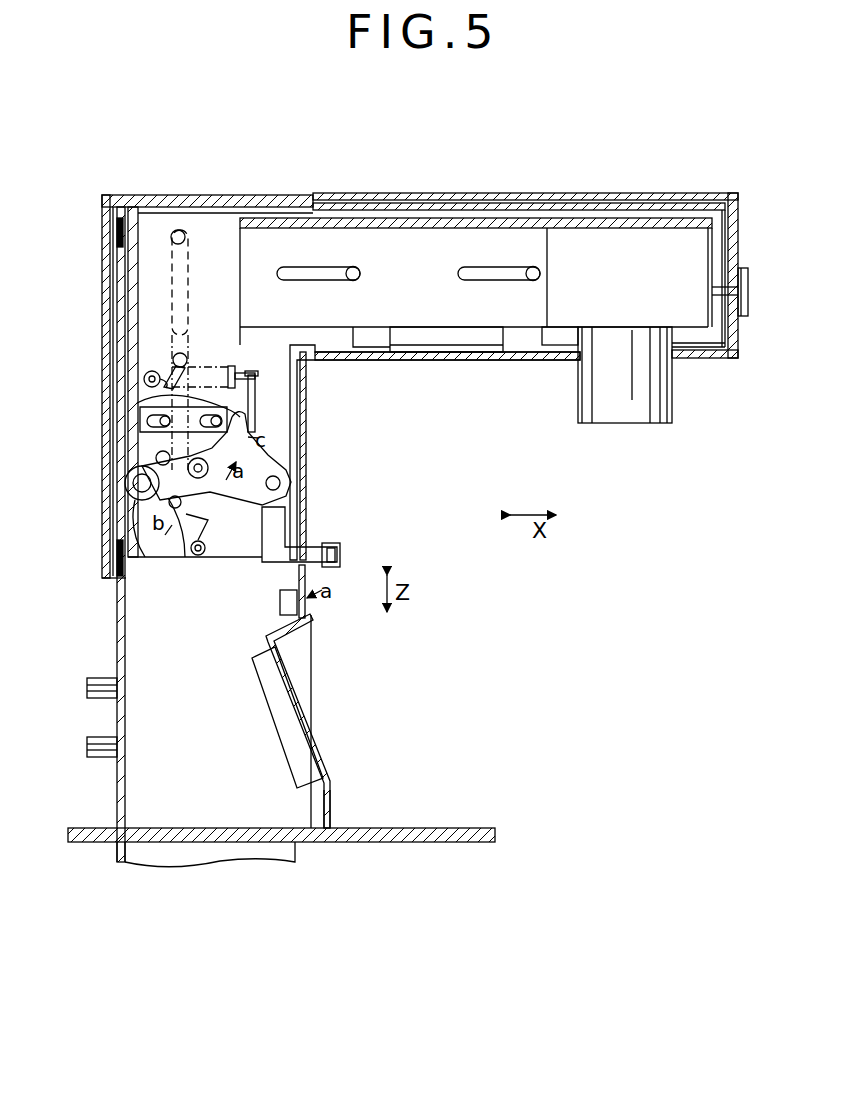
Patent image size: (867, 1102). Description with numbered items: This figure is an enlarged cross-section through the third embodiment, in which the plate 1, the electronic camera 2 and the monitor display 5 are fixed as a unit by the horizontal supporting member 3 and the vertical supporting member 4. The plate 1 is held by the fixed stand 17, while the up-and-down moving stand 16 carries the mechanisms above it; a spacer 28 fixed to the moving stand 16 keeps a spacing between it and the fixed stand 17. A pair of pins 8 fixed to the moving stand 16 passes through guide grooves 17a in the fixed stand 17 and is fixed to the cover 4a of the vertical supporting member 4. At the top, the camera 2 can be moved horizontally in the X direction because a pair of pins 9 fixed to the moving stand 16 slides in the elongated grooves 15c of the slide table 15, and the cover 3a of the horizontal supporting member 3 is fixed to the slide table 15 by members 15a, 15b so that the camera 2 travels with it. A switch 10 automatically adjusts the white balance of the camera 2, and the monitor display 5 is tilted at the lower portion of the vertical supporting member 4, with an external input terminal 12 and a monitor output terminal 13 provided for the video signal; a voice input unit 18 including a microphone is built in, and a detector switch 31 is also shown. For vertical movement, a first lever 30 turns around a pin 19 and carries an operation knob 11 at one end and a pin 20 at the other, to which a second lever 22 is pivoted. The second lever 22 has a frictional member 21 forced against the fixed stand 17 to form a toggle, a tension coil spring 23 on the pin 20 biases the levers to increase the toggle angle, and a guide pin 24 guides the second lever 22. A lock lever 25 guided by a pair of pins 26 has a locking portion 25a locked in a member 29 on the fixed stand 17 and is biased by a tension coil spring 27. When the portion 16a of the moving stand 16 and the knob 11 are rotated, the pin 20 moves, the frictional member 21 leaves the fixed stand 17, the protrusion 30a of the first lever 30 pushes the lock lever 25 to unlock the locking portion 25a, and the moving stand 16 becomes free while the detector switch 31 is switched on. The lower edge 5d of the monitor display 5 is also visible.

The plate 1 is at (435, 828).
The camera 2 is at (620, 428).
The horizontal supporting member 3 is at (636, 196).
The cover 3a is at (740, 333).
The vertical supporting member 4 is at (312, 455).
The cover 4a is at (306, 498).
The monitor display 5 is at (300, 736).
The cassette bottom edge 5d is at (332, 800).
The pins 8 is at (186, 237).
The pins 9 is at (360, 275).
The switch 10 is at (748, 292).
The operation knob 11 is at (342, 556).
The external input terminal 12 is at (88, 690).
The monitor output terminal 13 is at (88, 746).
The slide table 15 is at (290, 222).
The member 15a is at (385, 355).
The member 15b is at (530, 355).
The elongated grooves 15c is at (296, 282).
The up-and-down moving stand 16 is at (208, 205).
The portion of moving stand 16a is at (130, 520).
The fixed stand 17 is at (120, 618).
The guide grooves 17a is at (188, 284).
The voice input unit 18 is at (311, 652).
The pin 19 is at (281, 483).
The pin 20 is at (258, 500).
The frictional member 21 is at (160, 560).
The second lever 22 is at (182, 518).
The tension coil spring 23 is at (208, 533).
The guide pin 24 is at (125, 484).
The lock lever 25 is at (258, 398).
The locking portion 25a is at (140, 433).
The pins 26 is at (160, 408).
The tension coil spring 27 is at (230, 376).
The spacer 28 is at (120, 233).
The member 29 is at (145, 385).
The first lever 30 is at (282, 596).
The protrusion 30a is at (306, 425).
The detector switch 31 is at (262, 562).